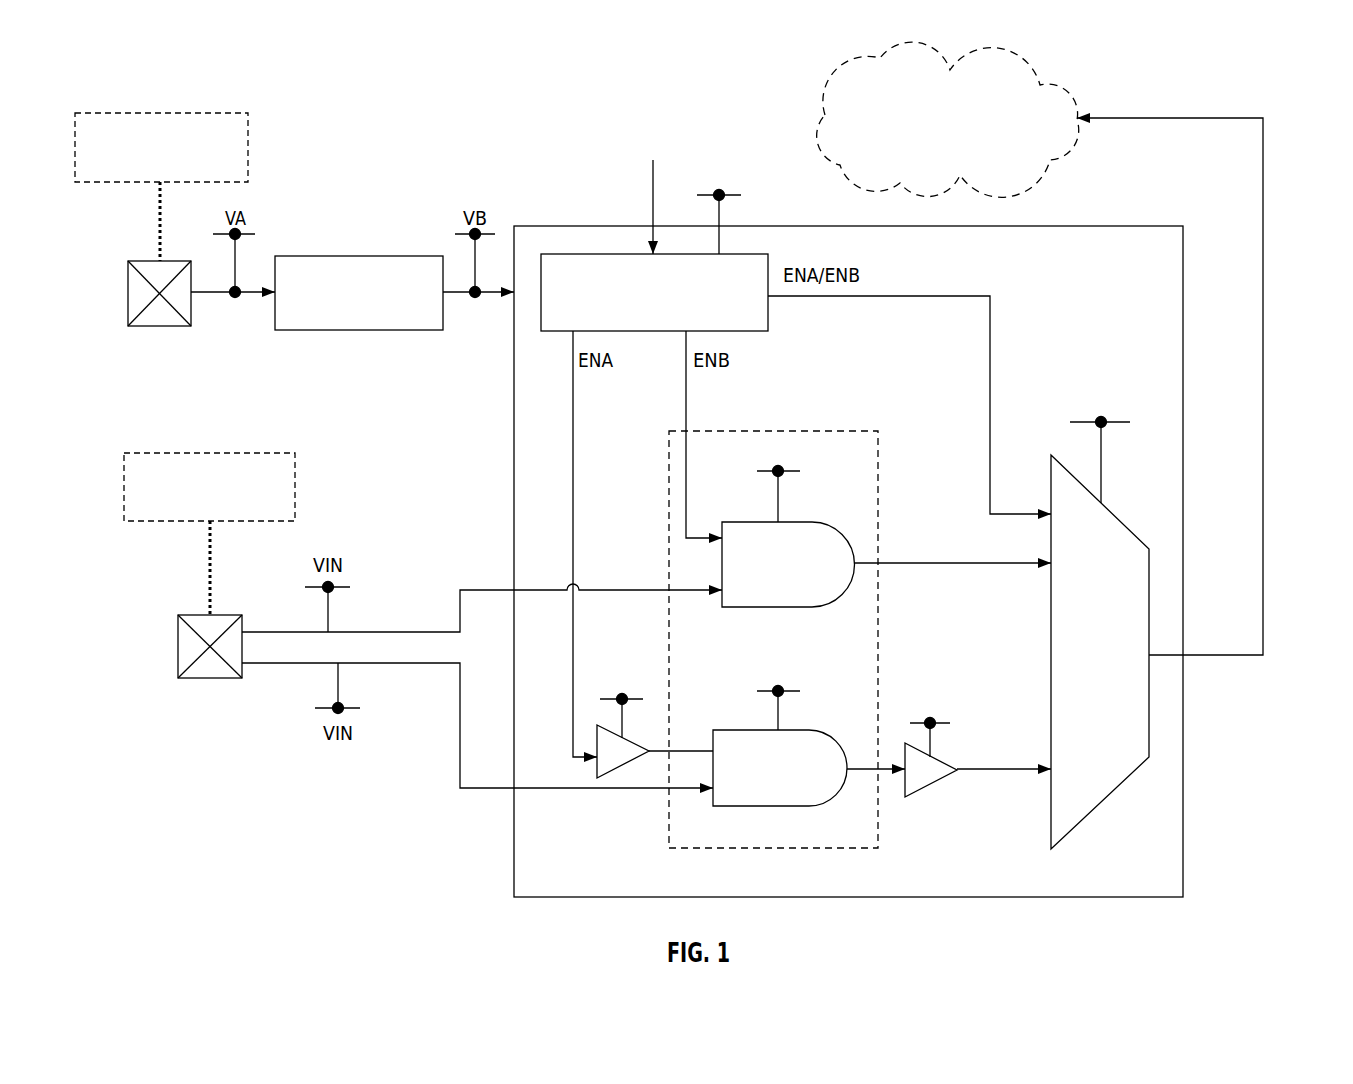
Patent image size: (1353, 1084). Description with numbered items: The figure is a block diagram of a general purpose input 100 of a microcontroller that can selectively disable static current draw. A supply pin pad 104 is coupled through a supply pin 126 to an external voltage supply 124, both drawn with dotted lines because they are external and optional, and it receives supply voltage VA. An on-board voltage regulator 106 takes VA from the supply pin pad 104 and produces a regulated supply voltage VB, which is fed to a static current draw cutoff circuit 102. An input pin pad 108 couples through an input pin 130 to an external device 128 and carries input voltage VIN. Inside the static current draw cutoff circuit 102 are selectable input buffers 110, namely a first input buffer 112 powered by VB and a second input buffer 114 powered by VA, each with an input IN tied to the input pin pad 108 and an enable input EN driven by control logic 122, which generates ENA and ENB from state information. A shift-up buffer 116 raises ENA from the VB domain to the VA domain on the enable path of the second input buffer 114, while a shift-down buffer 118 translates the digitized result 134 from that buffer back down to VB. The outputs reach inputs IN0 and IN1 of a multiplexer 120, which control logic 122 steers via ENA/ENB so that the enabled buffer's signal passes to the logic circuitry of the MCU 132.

The general purpose input 100 is at (1262, 74).
The static current draw cutoff circuit 102 is at (1183, 276).
The supply pin pad 104 is at (241, 362).
The on-board voltage regulator 106 is at (419, 319).
The input pin pad 108 is at (285, 716).
The selectable input buffers 110 is at (878, 522).
The first input buffer 112 is at (795, 577).
The second input buffer 114 is at (787, 782).
The shift-up buffer 116 is at (607, 770).
The shift-down buffer 118 is at (957, 749).
The multiplexer (MUX) 120 is at (1116, 680).
The control logic 122 is at (727, 311).
The external voltage supply 124 is at (209, 174).
The supply pin 126 is at (158, 224).
The external device 128 is at (226, 514).
The input pin 130 is at (208, 566).
The logic circuitry of the MCU 132 is at (960, 149).
The digitized result 134 is at (865, 775).